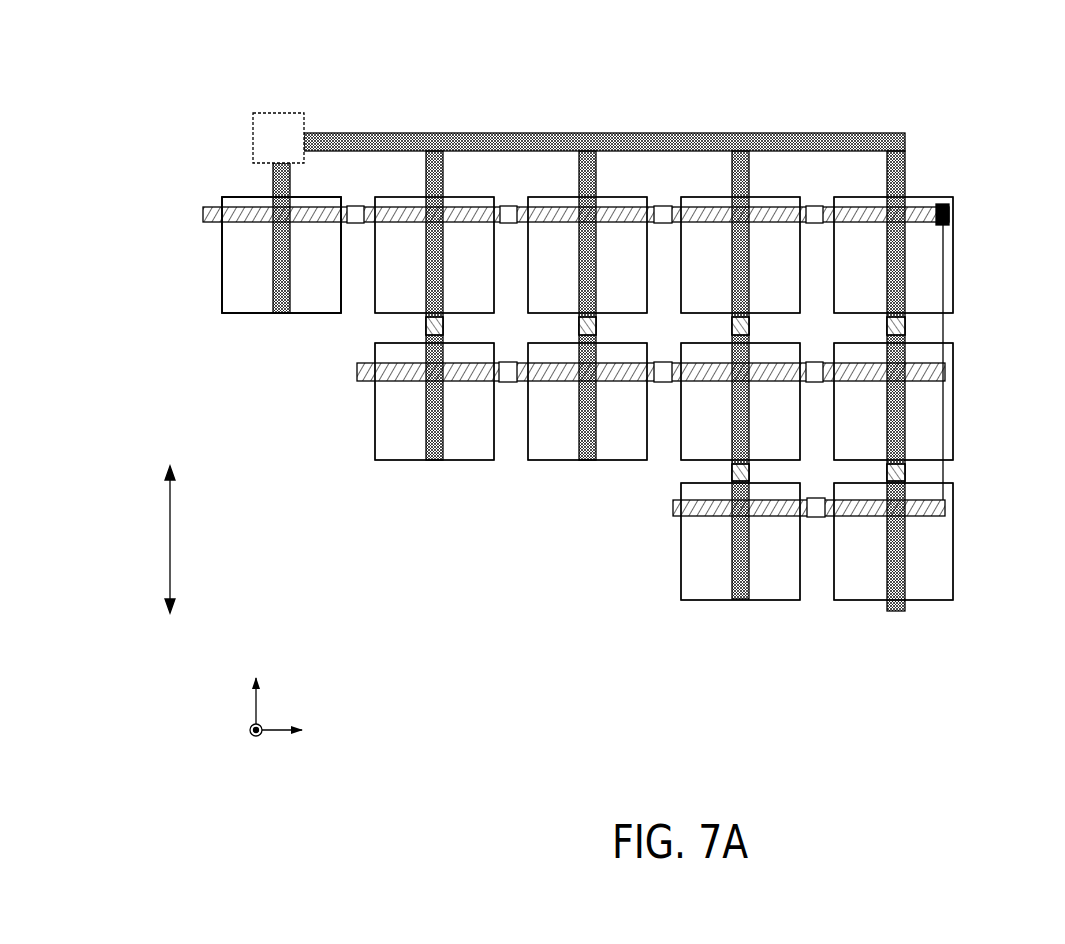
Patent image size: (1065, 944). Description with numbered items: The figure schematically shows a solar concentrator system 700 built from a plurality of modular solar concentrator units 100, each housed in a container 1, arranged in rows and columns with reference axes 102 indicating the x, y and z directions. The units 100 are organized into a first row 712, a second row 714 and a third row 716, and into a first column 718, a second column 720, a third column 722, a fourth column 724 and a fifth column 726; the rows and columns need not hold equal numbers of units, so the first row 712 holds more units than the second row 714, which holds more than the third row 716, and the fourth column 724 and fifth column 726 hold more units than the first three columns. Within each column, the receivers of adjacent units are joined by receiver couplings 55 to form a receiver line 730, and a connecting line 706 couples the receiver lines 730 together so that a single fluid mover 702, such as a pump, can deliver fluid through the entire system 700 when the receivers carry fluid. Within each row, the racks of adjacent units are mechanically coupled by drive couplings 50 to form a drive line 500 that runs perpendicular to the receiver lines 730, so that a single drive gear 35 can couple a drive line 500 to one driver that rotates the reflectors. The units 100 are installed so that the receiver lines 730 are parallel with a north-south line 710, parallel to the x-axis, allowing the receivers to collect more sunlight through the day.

The solar concentrator system 700 is at (198, 60).
The fluid mover 702 is at (301, 112).
The connecting line 706 is at (500, 132).
The receiver coupling 55 is at (590, 316).
The drive coupling 50 is at (820, 205).
The drive line 500 is at (923, 205).
The drive gear 35 is at (950, 215).
The solar concentrator unit 100 is at (196, 200).
The container 1 is at (253, 195).
The first row 712 is at (183, 246).
The second row 714 is at (251, 396).
The third row 716 is at (643, 548).
The first column 718 is at (257, 320).
The second column 720 is at (429, 472).
The third column 722 is at (621, 475).
The fourth column 724 is at (726, 629).
The fifth column 726 is at (932, 629).
The receiver line 730 is at (273, 268).
The north-south line 710 is at (170, 553).
The reference axes 102 is at (302, 697).